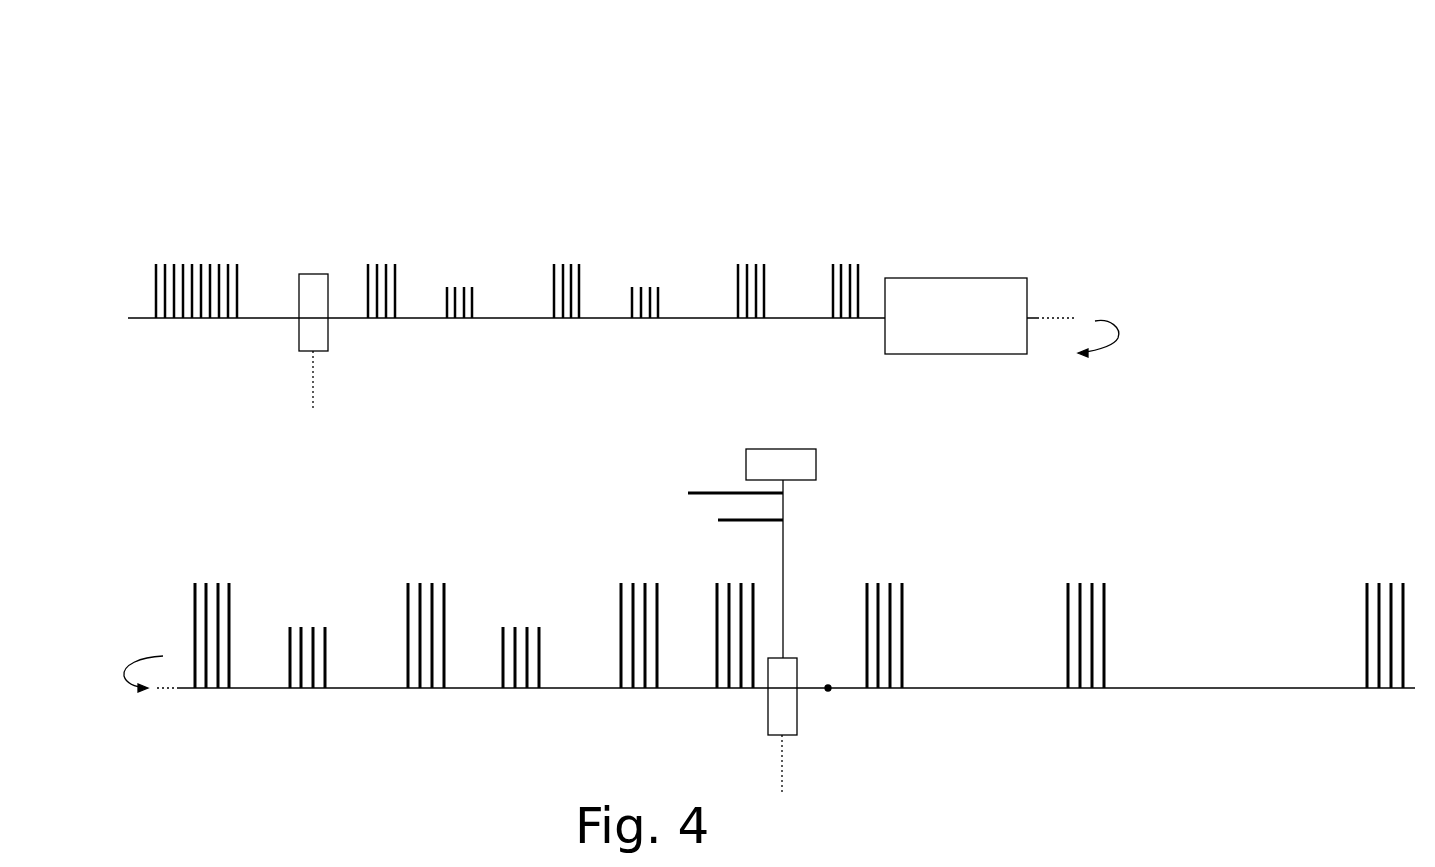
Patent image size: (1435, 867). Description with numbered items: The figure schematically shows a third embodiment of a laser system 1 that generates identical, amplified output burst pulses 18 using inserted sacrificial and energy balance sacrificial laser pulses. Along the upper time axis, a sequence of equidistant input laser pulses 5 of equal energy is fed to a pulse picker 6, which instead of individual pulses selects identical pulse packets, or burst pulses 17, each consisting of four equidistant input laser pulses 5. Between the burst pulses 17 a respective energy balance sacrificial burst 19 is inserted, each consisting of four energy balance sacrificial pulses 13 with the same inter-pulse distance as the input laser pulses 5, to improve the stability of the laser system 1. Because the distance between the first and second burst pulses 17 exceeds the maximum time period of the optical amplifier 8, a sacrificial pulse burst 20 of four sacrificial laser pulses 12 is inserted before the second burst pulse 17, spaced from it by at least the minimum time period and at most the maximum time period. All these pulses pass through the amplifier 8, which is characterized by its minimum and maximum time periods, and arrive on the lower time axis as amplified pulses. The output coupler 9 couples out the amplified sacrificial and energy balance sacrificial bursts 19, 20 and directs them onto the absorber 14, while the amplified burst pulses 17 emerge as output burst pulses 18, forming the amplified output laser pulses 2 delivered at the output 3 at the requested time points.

The laser system 1 is at (253, 157).
The amplified output laser pulse 2 is at (867, 648).
The output 3 is at (828, 692).
The input laser pulse 5 is at (156, 272).
The pulse picker 6 is at (321, 314).
The optical amplifier 8 is at (956, 316).
The output coupler 9 is at (790, 701).
The sacrificial laser pulse 12 is at (738, 276).
The energy balance sacrificial laser pulse 13 is at (447, 297).
The absorber 14 is at (768, 478).
The burst pulse 17 is at (398, 238).
The output burst pulse 18 is at (904, 575).
The energy balance sacrificial burst 19 is at (475, 262).
The sacrificial pulse burst 20 is at (767, 238).